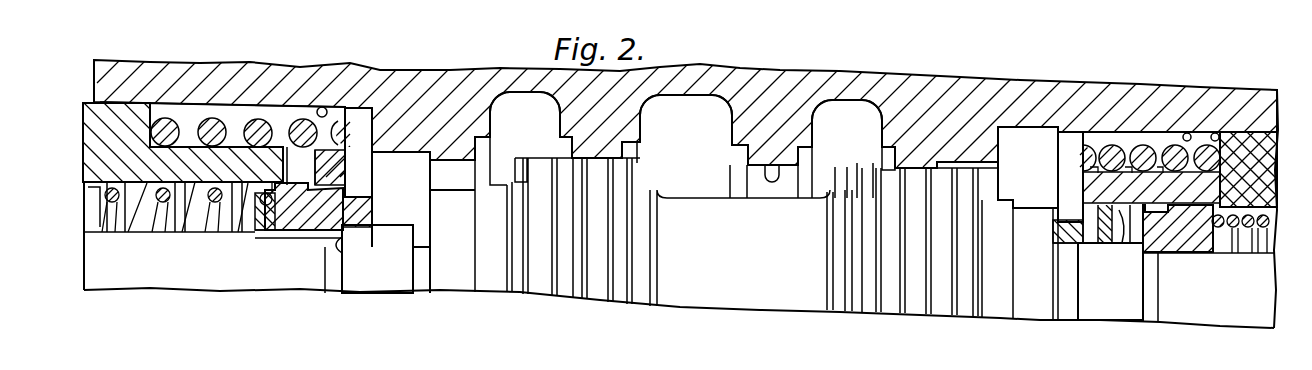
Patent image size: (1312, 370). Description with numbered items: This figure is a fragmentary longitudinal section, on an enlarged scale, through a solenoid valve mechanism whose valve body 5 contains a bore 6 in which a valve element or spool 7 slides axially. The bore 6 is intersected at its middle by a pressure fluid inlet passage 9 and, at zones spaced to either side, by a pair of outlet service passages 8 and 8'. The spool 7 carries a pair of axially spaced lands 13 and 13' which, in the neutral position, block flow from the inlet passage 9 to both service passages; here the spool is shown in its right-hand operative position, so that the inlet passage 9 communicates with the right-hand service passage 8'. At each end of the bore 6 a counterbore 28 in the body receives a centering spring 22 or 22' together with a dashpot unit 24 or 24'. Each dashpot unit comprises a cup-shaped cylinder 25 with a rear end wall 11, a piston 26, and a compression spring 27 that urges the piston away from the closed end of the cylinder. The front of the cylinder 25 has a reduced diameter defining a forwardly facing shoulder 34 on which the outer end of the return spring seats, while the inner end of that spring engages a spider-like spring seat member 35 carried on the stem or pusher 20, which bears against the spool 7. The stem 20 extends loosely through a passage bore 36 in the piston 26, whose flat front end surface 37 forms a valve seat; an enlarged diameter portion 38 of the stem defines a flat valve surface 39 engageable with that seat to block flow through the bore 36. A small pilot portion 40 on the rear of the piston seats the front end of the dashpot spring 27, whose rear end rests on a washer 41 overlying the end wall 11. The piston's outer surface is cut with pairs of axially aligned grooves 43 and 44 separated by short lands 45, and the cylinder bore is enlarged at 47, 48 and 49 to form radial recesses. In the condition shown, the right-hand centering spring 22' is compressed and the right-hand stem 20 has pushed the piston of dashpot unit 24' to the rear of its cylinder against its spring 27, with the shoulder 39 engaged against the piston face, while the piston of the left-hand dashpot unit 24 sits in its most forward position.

The valve body 5 is at (938, 70).
The bore 6 is at (776, 172).
The valve element or spool 7 is at (758, 287).
The outlet service passage 8 is at (525, 76).
The outlet service passage 8' is at (847, 84).
The pressure fluid inlet passage 9 is at (680, 115).
The rear end wall 11 is at (83, 178).
The land 13 is at (685, 165).
The land 13' is at (863, 165).
The stem or pusher 20 is at (212, 283).
The centering spring 22 is at (686, 103).
The centering spring 22' is at (1144, 115).
The dashpot unit 24 is at (291, 109).
The dashpot unit 24' is at (1102, 116).
The cylinder 25 is at (125, 92).
The piston 26 is at (318, 240).
The compression spring 27 is at (128, 232).
The counterbore 28 is at (324, 106).
The forwardly facing shoulder 34 is at (160, 102).
The spring seat member 35 is at (362, 112).
The passage bore 36 is at (290, 240).
The front end surface 37 is at (345, 205).
The enlarged diameter portion 38 is at (372, 275).
The valve surface 39 is at (342, 250).
The pilot portion 40 is at (241, 236).
The washer 41 is at (95, 233).
The axially extending groove 43 is at (328, 192).
The axially extending groove 44 is at (265, 232).
The land 45 is at (1190, 130).
The bore enlargement 47 is at (212, 226).
The bore enlargement 48 is at (1092, 183).
The bore enlargement 49 is at (1255, 195).